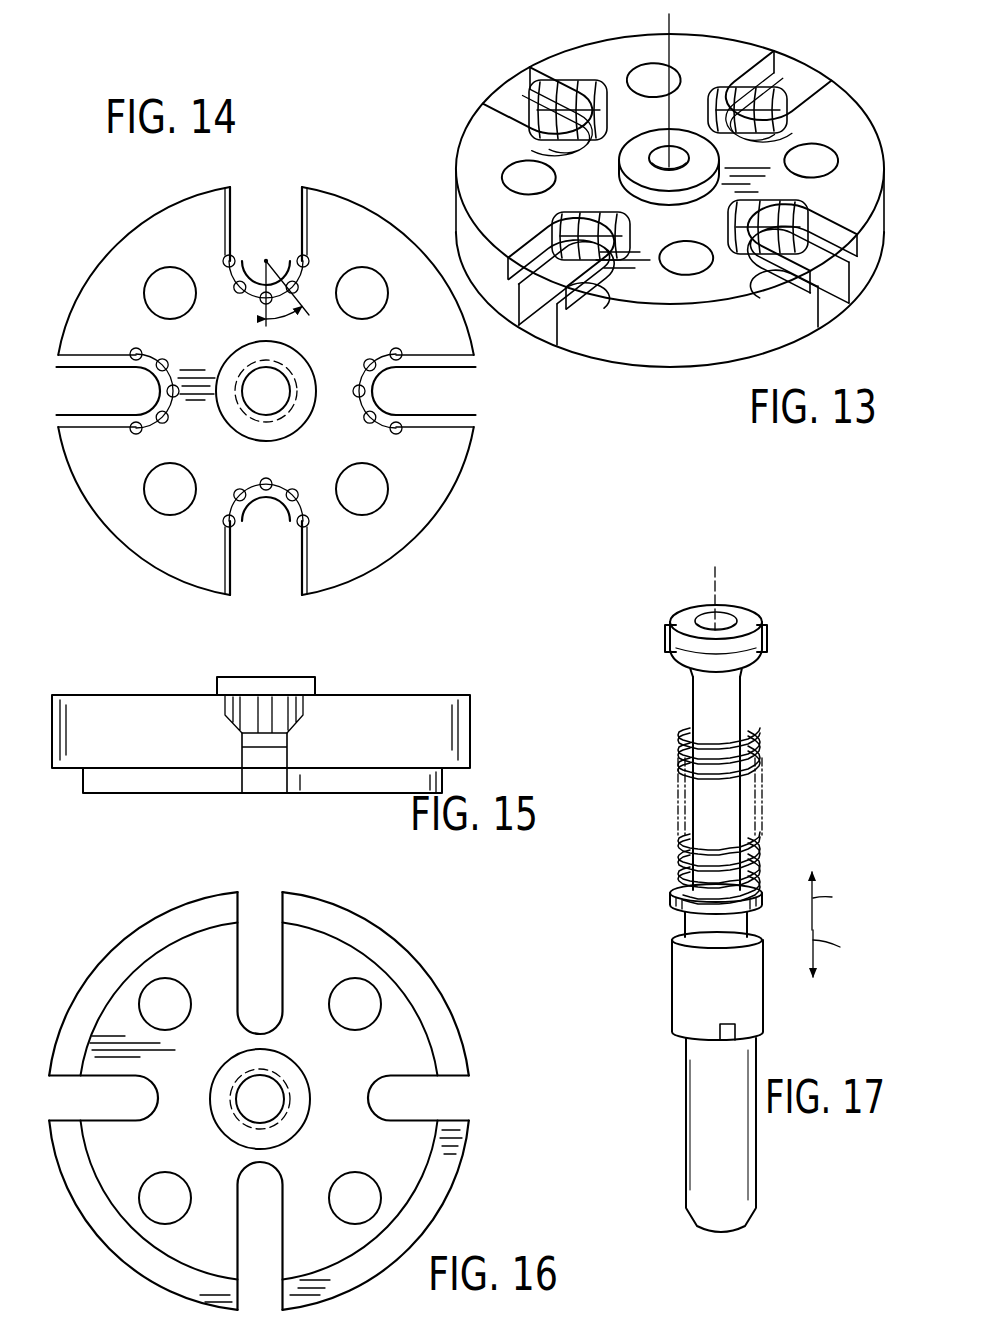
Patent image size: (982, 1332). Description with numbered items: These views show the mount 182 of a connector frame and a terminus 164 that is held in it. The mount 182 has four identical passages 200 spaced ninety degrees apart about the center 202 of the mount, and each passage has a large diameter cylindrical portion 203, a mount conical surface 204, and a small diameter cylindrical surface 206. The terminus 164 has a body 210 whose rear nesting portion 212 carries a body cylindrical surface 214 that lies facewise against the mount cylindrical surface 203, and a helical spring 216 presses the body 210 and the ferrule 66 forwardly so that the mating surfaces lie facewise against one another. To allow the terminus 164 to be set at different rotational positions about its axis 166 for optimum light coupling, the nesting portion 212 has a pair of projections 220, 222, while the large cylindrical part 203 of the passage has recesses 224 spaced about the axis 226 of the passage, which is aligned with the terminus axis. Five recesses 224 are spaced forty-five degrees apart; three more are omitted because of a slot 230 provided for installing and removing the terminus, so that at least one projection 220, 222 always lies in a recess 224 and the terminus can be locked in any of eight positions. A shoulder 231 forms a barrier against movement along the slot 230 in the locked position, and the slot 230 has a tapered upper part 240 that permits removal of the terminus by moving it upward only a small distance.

In FIG. 14, the mount 182 is at (157, 694).
In FIG. 13, the mount 182 is at (466, 122).
In FIG. 15, the mount 182 is at (157, 694).
In FIG. 16, the mount 182 is at (169, 908).
In FIG. 14, the passage 200 is at (390, 398).
In FIG. 13, the passage 200 is at (775, 203).
In FIG. 13, the center of the mount 202 is at (672, 16).
In FIG. 13, the large diameter cylindrical portion 203 is at (597, 224).
In FIG. 13, the mount conical surface 204 is at (554, 226).
In FIG. 13, the small diameter cylindrical surface 206 is at (584, 270).
In FIG. 14, the recess 224 is at (226, 258).
In FIG. 13, the recess 224 is at (771, 240).
In FIG. 14, the axis of the passage 226 is at (267, 258).
In FIG. 13, the axis of the passage 226 is at (766, 205).
In FIG. 14, the slot 230 is at (247, 190).
In FIG. 13, the slot 230 is at (543, 290).
In FIG. 14, the shoulder 231 is at (285, 536).
In FIG. 13, the shoulder 231 is at (566, 80).
In FIG. 13, the tapered upper part 240 is at (541, 304).
In FIG. 17, the terminus 164 is at (730, 884).
In FIG. 17, the axis 166 is at (719, 575).
In FIG. 17, the body 210 is at (693, 700).
In FIG. 17, the nesting portion 212 is at (683, 608).
In FIG. 17, the body cylindrical surface 214 is at (740, 658).
In FIG. 17, the helical spring 216 is at (760, 847).
In FIG. 17, the projection 220 is at (762, 625).
In FIG. 17, the projection 222 is at (667, 637).
In FIG. 17, the ferrule 66 is at (683, 1135).